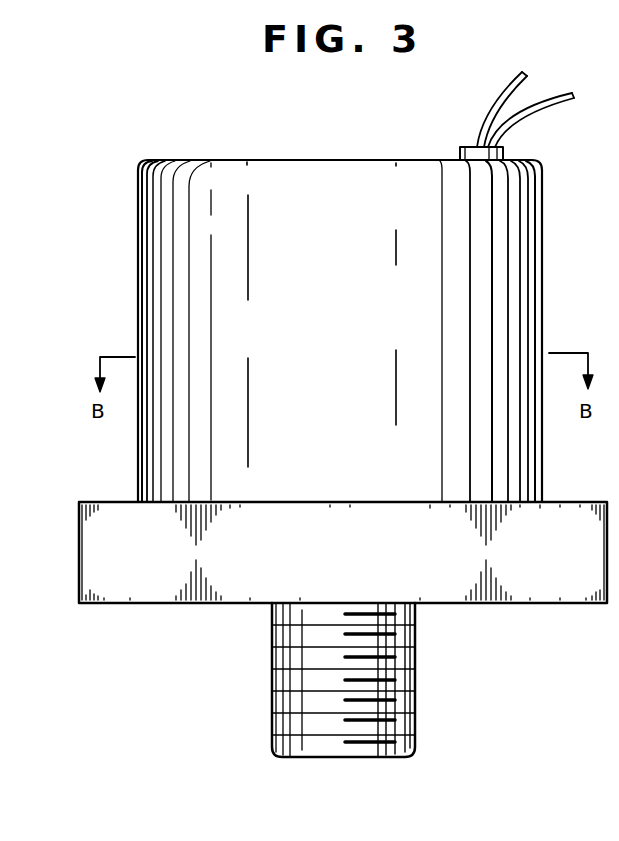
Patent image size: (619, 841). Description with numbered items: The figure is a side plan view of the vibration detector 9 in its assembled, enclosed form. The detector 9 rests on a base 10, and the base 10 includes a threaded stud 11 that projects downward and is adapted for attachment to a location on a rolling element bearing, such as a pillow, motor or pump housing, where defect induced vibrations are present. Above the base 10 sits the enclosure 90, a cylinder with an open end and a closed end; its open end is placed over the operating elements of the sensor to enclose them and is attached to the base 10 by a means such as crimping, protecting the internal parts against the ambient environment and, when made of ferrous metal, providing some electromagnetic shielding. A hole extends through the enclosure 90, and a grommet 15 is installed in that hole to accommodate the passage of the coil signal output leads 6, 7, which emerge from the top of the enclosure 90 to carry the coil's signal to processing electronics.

The enclosure 90 is at (138, 193).
The grommet 15 is at (462, 146).
The coil signal output lead 7 is at (500, 92).
The coil signal output lead 6 is at (550, 108).
The base 10 is at (534, 585).
The threaded stud 11 is at (392, 678).
The vibration detector 9 is at (207, 645).